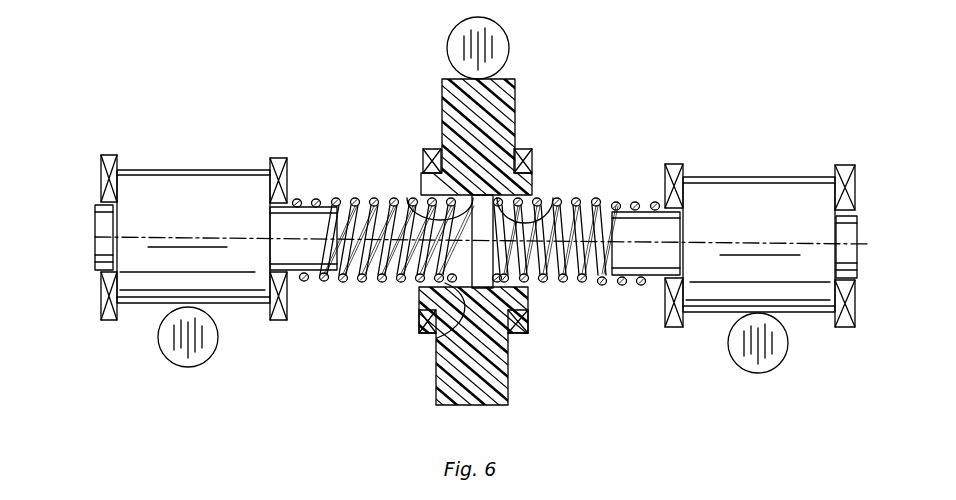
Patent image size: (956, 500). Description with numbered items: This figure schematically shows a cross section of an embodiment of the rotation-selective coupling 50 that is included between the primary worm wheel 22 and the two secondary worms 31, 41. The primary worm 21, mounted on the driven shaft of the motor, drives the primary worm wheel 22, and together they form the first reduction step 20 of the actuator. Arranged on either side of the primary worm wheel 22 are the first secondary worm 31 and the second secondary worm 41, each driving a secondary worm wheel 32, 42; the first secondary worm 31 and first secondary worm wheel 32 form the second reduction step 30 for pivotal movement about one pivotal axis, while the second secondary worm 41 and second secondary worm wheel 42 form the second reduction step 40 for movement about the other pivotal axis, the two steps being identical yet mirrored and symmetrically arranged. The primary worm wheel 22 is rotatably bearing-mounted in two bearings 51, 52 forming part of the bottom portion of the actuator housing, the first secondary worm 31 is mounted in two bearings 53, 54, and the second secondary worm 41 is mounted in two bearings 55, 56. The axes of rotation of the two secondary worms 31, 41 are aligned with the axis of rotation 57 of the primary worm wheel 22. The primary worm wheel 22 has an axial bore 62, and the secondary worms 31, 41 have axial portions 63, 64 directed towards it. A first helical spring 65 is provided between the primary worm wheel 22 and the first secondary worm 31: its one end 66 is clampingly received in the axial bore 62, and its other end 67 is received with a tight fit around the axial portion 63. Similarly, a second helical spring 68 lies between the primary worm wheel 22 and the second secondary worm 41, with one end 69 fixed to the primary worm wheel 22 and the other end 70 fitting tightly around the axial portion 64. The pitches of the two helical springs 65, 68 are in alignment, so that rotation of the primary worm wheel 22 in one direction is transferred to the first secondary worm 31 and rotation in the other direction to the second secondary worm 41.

The first reduction step 20 is at (418, 51).
The primary worm 21 is at (510, 48).
The primary worm wheel 22 is at (517, 97).
The second reduction step 30 is at (766, 398).
The first secondary worm 31 is at (745, 178).
The first secondary worm wheel 32 is at (788, 350).
The second reduction step 40 is at (170, 392).
The second secondary worm 41 is at (178, 168).
The second secondary worm wheel 42 is at (158, 340).
The rotation-selective coupling 50 is at (538, 384).
The bearing 51 is at (428, 150).
The bearing 52 is at (533, 152).
The bearing 53 is at (675, 165).
The bearing 54 is at (840, 165).
The bearing 55 is at (110, 155).
The bearing 56 is at (283, 157).
The axis of rotation 57 is at (758, 243).
The axial bore 62 is at (410, 200).
The axial portion 63 is at (657, 277).
The axial portion 64 is at (290, 275).
The first helical spring 65 is at (565, 285).
The spring end 66 is at (545, 205).
The spring end 67 is at (650, 203).
The second helical spring 68 is at (370, 283).
The spring end 69 is at (443, 335).
The spring end 70 is at (300, 200).